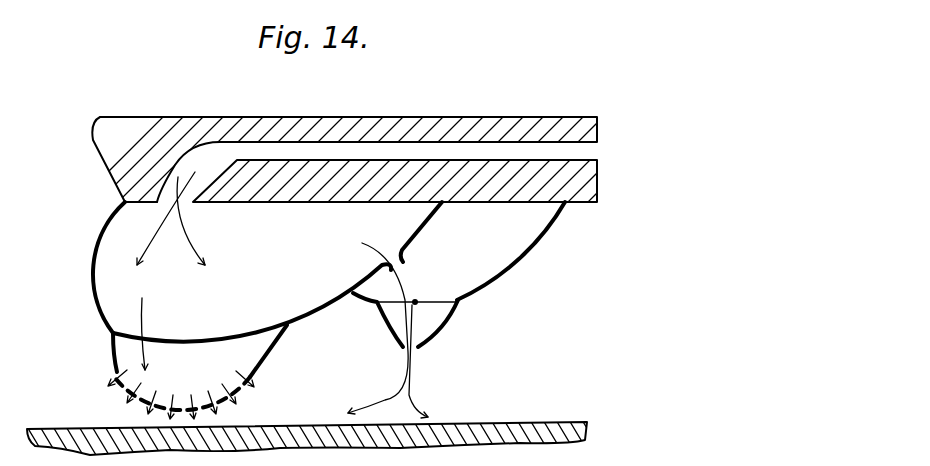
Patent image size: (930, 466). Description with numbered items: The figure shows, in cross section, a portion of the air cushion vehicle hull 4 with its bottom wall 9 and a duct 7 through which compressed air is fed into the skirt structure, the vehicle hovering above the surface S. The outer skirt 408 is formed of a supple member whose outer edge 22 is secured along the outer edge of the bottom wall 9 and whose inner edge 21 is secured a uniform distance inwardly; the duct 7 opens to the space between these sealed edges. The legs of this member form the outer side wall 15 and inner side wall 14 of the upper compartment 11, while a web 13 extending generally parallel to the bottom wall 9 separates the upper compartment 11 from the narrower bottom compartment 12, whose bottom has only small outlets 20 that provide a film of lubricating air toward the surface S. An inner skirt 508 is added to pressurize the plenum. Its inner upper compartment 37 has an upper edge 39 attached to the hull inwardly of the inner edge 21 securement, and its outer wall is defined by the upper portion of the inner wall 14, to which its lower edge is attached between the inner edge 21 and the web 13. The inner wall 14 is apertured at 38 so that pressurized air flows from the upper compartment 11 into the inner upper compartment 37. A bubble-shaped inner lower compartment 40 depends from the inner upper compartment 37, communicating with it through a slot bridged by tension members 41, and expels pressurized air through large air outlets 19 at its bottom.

The hull 4 is at (118, 116).
The ducts 7 is at (335, 152).
The bottom wall 9 is at (580, 203).
The outer edge 22 is at (125, 201).
The skirt 408 is at (100, 240).
The outer side wall 15 is at (97, 296).
The upper compartment 11 is at (247, 262).
The web 13 is at (243, 333).
The bottom compartment 12 is at (191, 374).
The outlets 20 is at (130, 385).
The inner side wall 14 is at (312, 322).
The inner edge 21 is at (443, 203).
The inner upper compartment 37 is at (463, 249).
The aperture 38 is at (397, 267).
The upper edge 39 is at (565, 205).
The inner skirt 508 is at (523, 255).
The tension members 41 is at (390, 303).
The inner lower compartment 40 is at (437, 324).
The air outlets 19 is at (413, 347).
The surface S is at (527, 422).